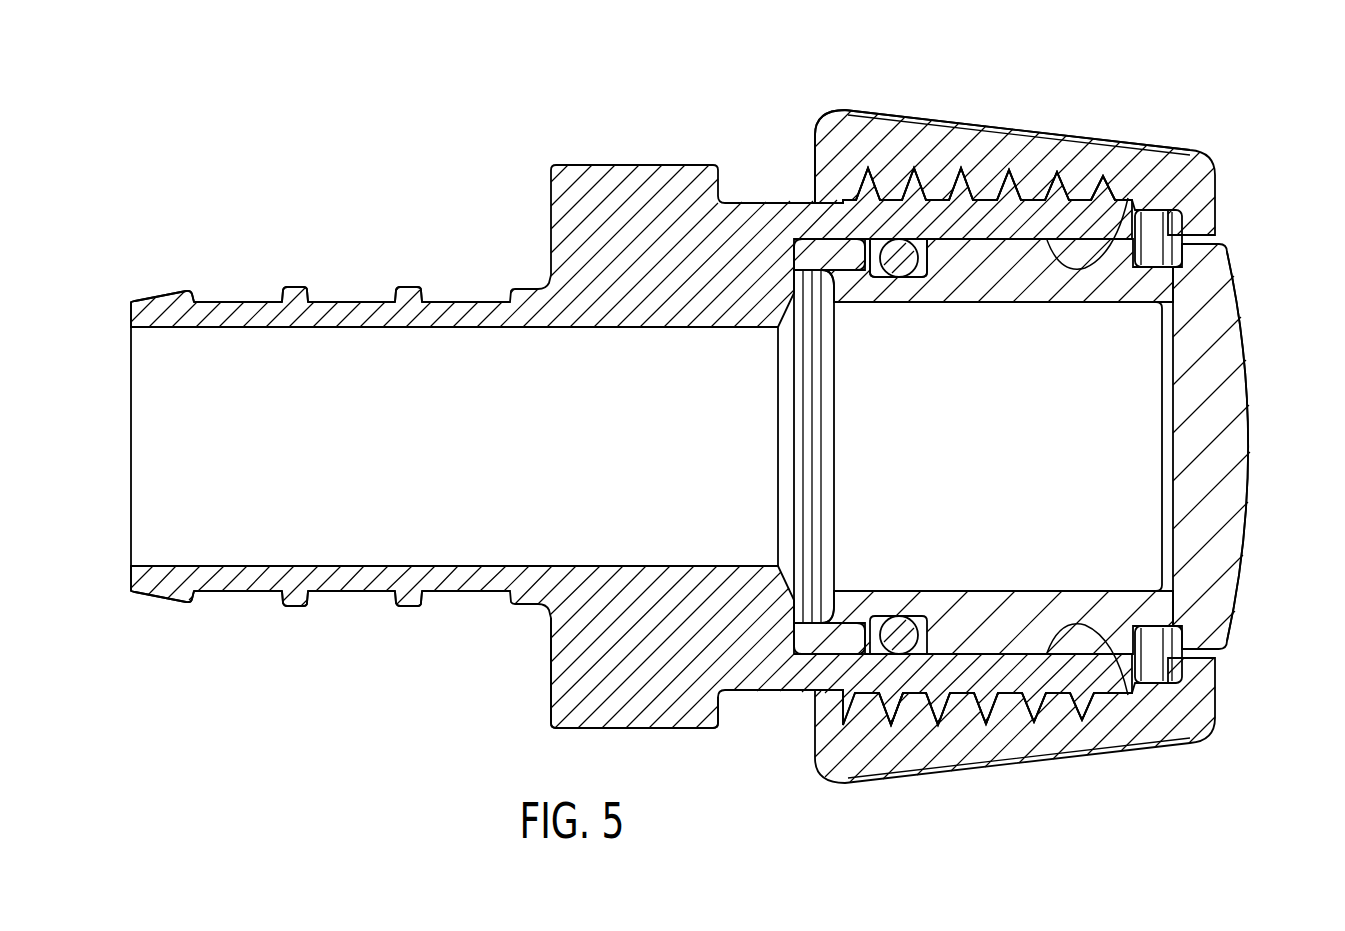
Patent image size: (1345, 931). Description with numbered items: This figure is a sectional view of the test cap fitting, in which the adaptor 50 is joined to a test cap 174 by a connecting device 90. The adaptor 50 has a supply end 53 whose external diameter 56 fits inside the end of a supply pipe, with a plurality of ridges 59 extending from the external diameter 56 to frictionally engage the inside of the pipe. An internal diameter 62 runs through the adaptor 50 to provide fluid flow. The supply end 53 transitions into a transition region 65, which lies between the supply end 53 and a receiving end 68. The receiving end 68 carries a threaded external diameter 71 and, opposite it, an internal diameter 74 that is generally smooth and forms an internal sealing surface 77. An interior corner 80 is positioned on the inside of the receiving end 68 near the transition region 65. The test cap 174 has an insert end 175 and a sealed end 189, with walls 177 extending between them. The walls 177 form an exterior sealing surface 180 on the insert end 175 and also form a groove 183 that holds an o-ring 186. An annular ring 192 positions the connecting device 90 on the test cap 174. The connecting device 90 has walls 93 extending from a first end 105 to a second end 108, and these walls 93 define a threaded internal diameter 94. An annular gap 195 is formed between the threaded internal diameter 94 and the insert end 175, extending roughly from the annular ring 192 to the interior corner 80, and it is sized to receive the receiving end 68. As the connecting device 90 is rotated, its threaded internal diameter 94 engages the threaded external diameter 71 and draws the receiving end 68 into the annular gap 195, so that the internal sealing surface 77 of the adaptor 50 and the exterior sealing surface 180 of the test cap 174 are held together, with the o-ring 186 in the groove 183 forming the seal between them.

The adaptor 50 is at (562, 195).
The supply end 53 is at (145, 317).
The external diameter 56 is at (233, 302).
The ridges 59 is at (297, 290).
The internal diameter 62 is at (163, 565).
The transition region 65 is at (568, 675).
The interior corner 80 is at (794, 243).
The insert end 175 is at (790, 431).
The walls 177 is at (1010, 608).
The test cap 174 is at (1235, 365).
The sealed end 189 is at (1237, 458).
The second end 108 is at (1205, 188).
The first end 105 is at (817, 127).
The walls 93 is at (890, 112).
The threaded internal diameter 94 is at (903, 202).
The annular ring 192 is at (1115, 678).
The threaded external diameter 71 is at (915, 693).
The annular gap 195 is at (917, 697).
The receiving end 68 is at (980, 690).
The internal sealing surface 77 is at (1028, 656).
The internal diameter 74 is at (1058, 656).
The groove 183 is at (940, 262).
The o-ring 186 is at (905, 252).
The connecting device 90 is at (1095, 153).
The exterior sealing surface 180 is at (1128, 198).